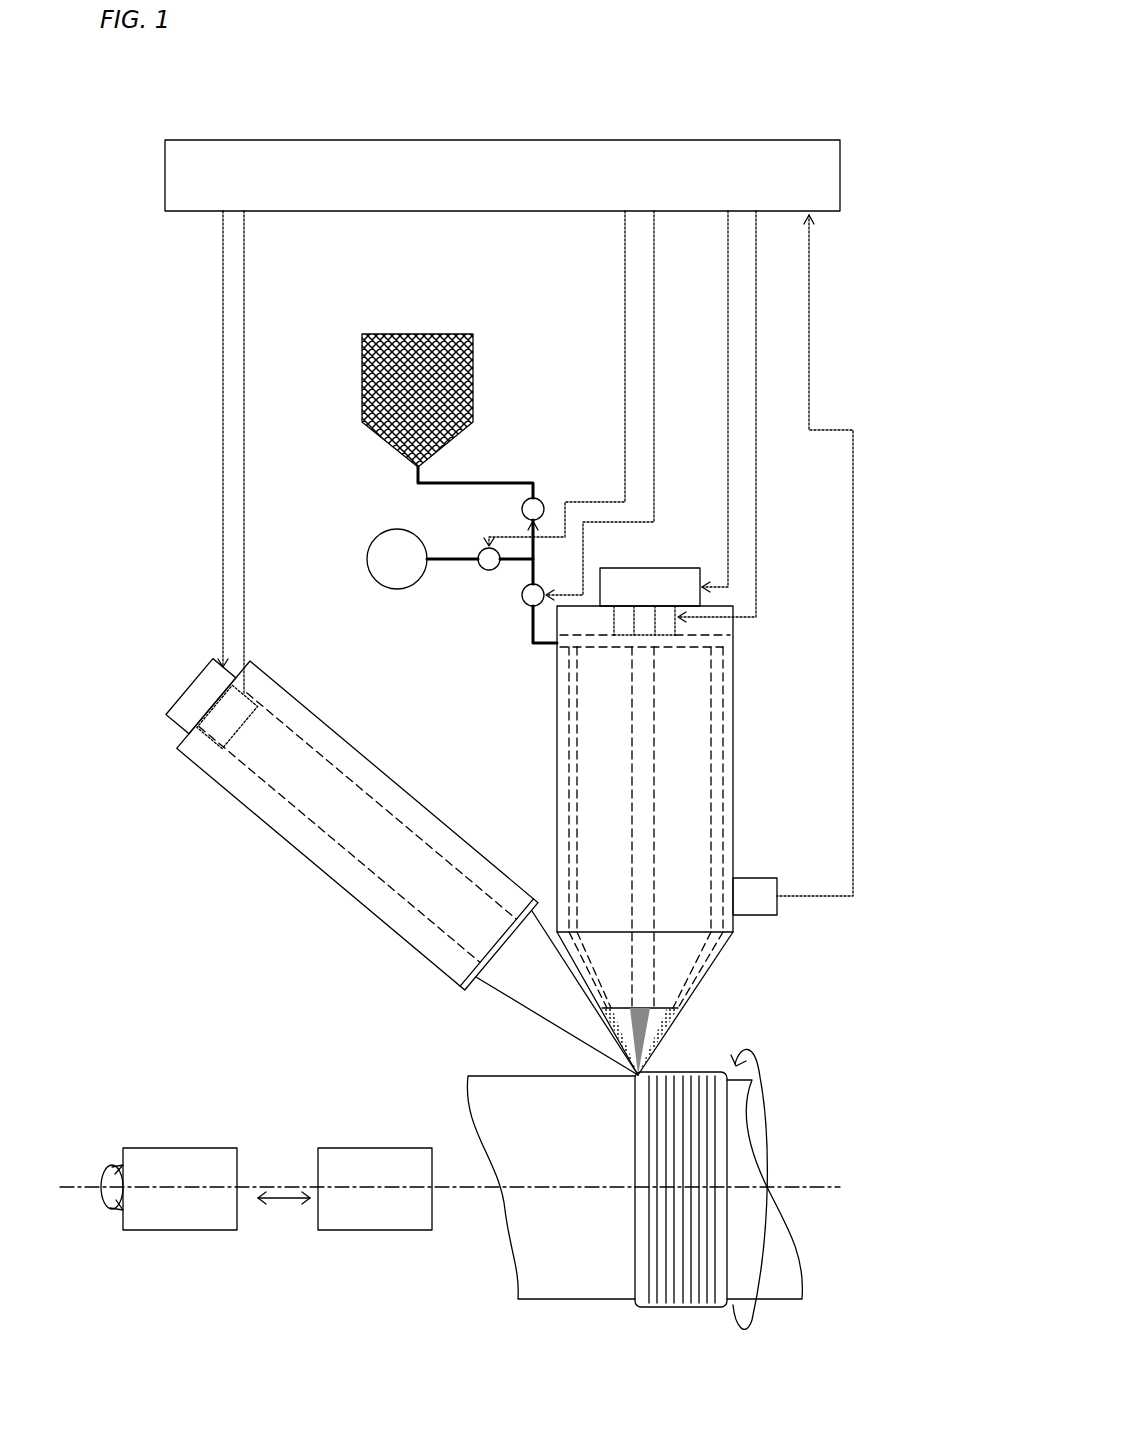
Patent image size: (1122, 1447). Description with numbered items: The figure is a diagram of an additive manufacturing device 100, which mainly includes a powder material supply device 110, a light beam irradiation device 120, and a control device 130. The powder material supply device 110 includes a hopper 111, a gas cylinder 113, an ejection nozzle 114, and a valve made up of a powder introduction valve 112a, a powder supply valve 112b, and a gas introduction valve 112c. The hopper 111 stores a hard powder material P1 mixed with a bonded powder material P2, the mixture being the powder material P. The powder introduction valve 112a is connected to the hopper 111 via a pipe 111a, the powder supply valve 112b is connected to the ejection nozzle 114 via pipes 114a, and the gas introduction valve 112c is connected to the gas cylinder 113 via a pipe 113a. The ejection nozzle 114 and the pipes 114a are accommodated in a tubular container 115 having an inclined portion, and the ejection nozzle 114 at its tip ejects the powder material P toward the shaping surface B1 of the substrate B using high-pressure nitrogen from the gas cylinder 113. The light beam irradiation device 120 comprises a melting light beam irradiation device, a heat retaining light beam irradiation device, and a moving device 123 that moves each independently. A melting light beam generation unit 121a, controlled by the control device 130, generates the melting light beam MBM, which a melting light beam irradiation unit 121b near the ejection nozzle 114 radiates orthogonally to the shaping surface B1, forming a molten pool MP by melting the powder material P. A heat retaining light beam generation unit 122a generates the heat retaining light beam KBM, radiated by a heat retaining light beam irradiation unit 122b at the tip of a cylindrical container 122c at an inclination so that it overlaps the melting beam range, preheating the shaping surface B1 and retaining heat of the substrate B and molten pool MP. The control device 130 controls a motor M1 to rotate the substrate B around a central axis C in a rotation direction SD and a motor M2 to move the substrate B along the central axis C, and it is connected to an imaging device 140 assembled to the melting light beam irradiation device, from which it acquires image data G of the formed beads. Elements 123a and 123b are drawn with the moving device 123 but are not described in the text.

The additive manufacturing device 100 is at (832, 81).
The control device 130 is at (820, 140).
The powder material supply device 110 is at (530, 456).
The hopper 111 is at (362, 355).
The pipe 111a is at (440, 483).
The powder introduction valve 112a is at (521, 510).
The powder supply valve 112b is at (525, 602).
The gas introduction valve 112c is at (480, 566).
The gas cylinder 113 is at (366, 559).
The pipe 113a is at (443, 553).
The ejection nozzle 114 is at (688, 988).
The pipes 114a is at (548, 645).
The container 115 is at (557, 750).
The light beam irradiation device 120 is at (228, 952).
The melting light beam generation unit 121a is at (677, 628).
The melting light beam irradiation unit 121b is at (642, 1005).
The heat retaining light beam generation unit 122a is at (258, 690).
The heat retaining light beam irradiation unit 122b is at (483, 975).
The container 122c is at (297, 857).
The moving device 123 is at (162, 625).
The drive unit 123a is at (622, 568).
The laser light source 123b is at (180, 697).
The imaging device 140 is at (760, 878).
The image data G is at (831, 420).
The powder material P is at (543, 334).
The hard powder material P1 is at (474, 378).
The bonded powder material P2 is at (474, 345).
The heat retaining light beam KBM is at (580, 1020).
The melting light beam MBM is at (668, 1023).
The molten pool MP is at (620, 1070).
The rotation direction SD is at (767, 1189).
The substrate B is at (527, 1243).
The shaping surface B1 is at (627, 1309).
The motor M1 is at (177, 1148).
The motor M2 is at (363, 1148).
The central axis C is at (838, 1187).